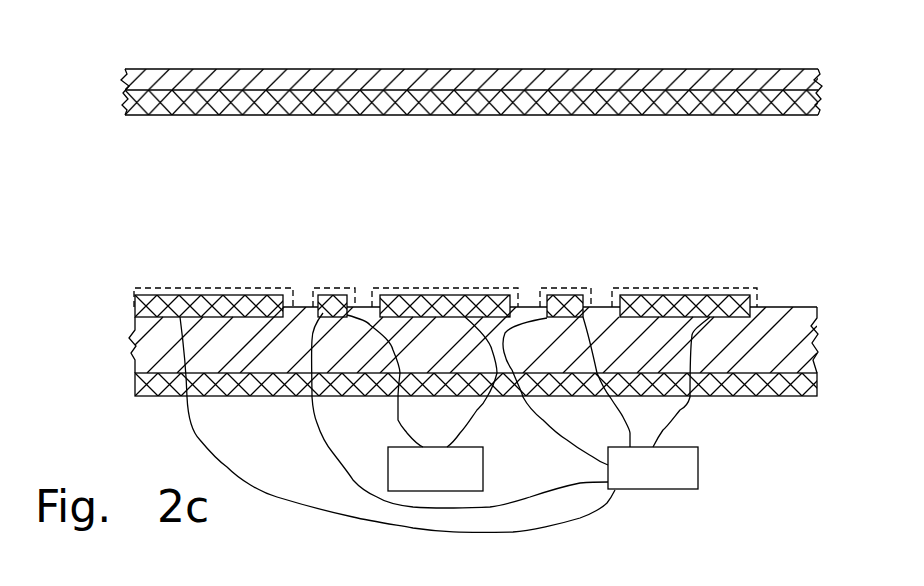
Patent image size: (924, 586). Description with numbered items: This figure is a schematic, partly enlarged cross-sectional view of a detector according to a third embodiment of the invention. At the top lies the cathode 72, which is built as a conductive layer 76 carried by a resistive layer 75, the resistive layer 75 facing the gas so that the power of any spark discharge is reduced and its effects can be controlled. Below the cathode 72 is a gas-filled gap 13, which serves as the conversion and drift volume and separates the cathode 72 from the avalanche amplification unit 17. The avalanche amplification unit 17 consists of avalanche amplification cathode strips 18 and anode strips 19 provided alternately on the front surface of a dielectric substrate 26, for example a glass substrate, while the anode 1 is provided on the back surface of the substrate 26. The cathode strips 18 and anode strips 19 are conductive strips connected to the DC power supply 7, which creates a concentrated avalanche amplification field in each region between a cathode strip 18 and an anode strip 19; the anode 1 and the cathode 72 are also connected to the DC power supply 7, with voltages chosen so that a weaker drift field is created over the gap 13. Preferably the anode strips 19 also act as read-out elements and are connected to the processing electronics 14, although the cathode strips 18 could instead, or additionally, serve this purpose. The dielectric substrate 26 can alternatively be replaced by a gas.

The cathode 72 is at (436, 104).
The conductive layer 76 is at (412, 74).
The resistive layer 75 is at (262, 117).
The gap 13 is at (550, 198).
The anode 1 is at (456, 390).
The dielectric substrate 26 is at (777, 313).
The avalanche amplification unit 17 is at (408, 287).
The avalanche amplification cathode strips 18 is at (200, 300).
The avalanche amplification anode strips 19 is at (335, 302).
The processing electronics 14 is at (435, 469).
The DC power supply 7 is at (653, 468).